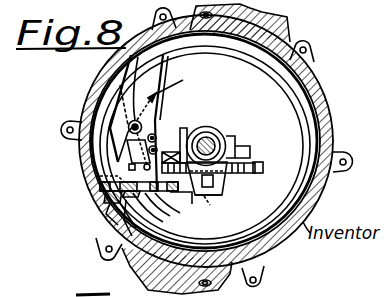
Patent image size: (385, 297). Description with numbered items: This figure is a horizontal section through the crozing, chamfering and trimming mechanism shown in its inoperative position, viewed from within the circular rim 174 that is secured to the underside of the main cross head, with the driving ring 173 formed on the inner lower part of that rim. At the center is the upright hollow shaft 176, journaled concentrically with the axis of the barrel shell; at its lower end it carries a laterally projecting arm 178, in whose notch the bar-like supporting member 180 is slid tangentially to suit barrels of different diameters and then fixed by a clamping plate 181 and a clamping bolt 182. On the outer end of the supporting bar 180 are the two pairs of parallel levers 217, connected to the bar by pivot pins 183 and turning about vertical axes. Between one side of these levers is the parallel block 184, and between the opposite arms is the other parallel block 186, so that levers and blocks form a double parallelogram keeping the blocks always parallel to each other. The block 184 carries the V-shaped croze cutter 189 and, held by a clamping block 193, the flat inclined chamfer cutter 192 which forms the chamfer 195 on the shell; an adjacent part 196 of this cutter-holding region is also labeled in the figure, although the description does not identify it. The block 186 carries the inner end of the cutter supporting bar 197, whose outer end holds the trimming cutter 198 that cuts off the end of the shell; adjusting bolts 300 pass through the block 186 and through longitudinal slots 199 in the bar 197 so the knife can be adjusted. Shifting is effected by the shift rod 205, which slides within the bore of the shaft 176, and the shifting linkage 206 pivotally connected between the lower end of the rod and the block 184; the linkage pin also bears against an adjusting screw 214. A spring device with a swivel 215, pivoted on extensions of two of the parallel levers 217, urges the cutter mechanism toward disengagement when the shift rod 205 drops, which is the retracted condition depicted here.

The driving ring 173 is at (296, 84).
The circular rim 174 is at (326, 111).
The upright hollow shaft 176 is at (228, 142).
The laterally projecting arm 178 is at (218, 178).
The supporting member 180 is at (262, 168).
The clamping plate 181 is at (216, 196).
The clamping bolt 182 is at (212, 207).
The pivot pins 183 is at (159, 214).
The parallel block 184 is at (175, 81).
The parallel block 186 is at (118, 226).
The croze cutter 189 is at (98, 88).
The chamfer cutter 192 is at (130, 70).
The clamping block 193 is at (128, 124).
The chamfer 195 is at (210, 125).
The arm 196 is at (172, 80).
The cutter supporting bar 197 is at (106, 200).
The trimming cutter 198 is at (106, 213).
The longitudinal slots 199 is at (122, 242).
The shift rod 205 is at (206, 130).
The shifting linkage 206 is at (228, 154).
The adjusting screw 214 is at (6, 180).
The swivel 215 is at (156, 135).
The parallel levers 217 is at (100, 185).
The adjusting bolts 300 is at (185, 212).